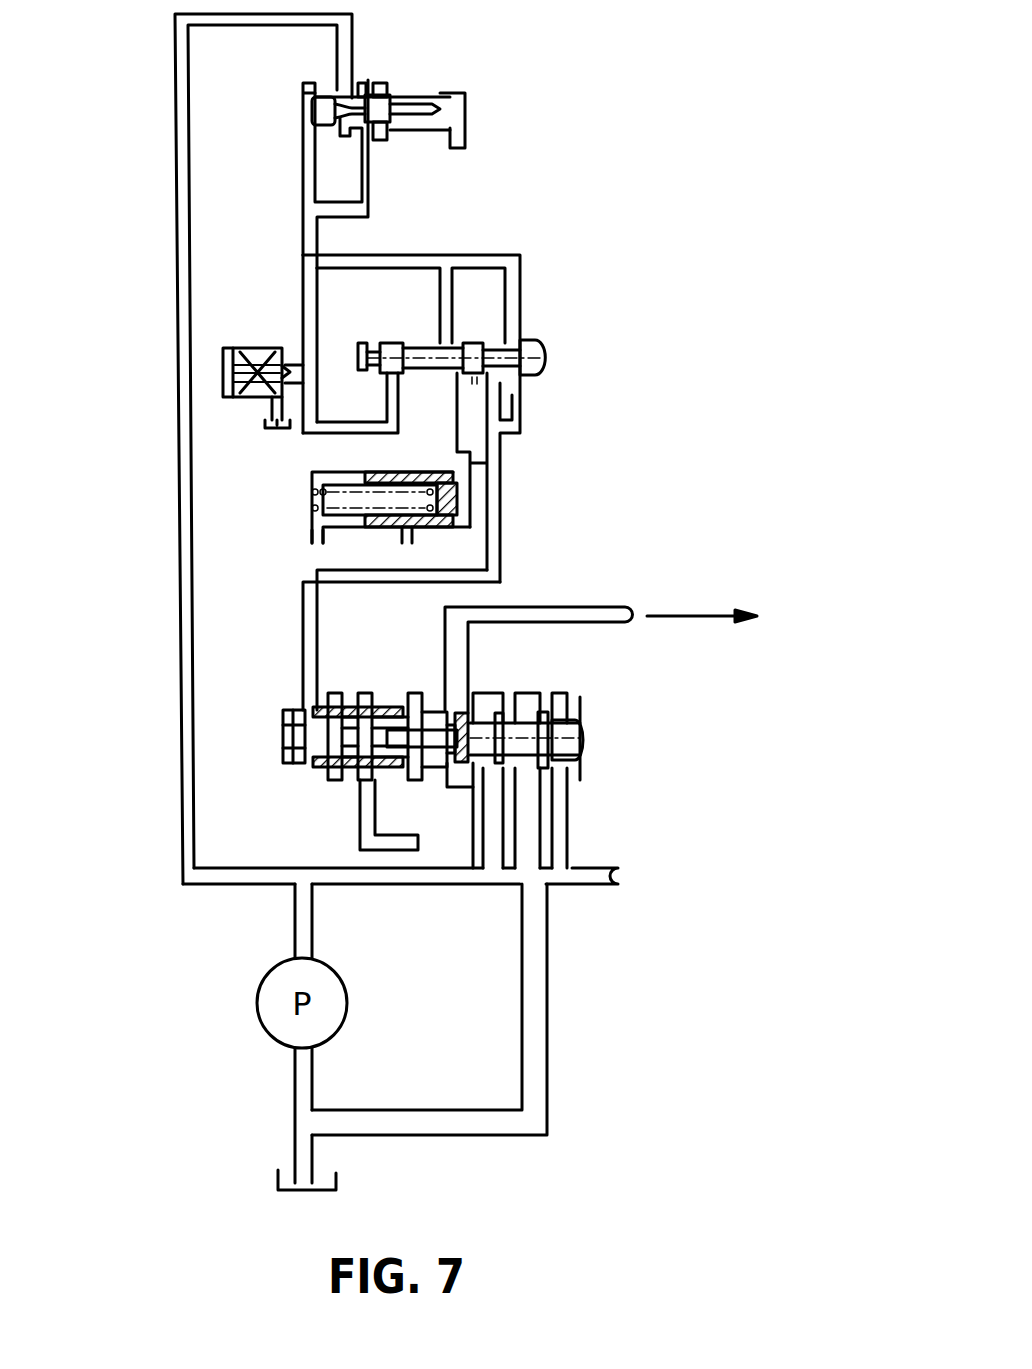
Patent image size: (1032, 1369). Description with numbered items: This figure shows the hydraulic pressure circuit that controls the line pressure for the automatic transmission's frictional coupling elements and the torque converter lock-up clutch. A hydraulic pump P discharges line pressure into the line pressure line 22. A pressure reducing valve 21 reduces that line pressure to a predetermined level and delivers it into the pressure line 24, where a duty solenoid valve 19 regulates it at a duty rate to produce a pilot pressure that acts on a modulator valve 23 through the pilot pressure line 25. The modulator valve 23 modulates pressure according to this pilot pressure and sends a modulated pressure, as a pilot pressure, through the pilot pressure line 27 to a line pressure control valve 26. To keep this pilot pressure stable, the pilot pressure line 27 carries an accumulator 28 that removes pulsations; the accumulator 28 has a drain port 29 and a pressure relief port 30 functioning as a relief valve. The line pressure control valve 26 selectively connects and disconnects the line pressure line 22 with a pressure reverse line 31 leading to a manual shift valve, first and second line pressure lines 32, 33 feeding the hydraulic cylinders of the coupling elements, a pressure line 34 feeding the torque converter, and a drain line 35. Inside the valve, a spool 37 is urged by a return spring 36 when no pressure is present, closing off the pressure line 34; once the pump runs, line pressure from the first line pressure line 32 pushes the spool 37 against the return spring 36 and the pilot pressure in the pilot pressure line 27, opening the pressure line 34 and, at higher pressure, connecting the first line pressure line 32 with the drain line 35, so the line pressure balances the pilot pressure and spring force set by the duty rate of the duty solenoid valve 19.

The duty solenoid valve 19 is at (250, 346).
The pressure reducing valve 21 is at (424, 92).
The line pressure line 22 is at (177, 400).
The modulator valve 23 is at (423, 340).
The pressure line 24 is at (302, 238).
The pilot pressure line 25 is at (322, 385).
The line pressure control valve 26 is at (385, 700).
The pilot pressure line 27 is at (503, 533).
The accumulator 28 is at (430, 467).
The drain port 29 is at (310, 538).
The pressure relief port 30 is at (412, 537).
The pressure reverse line 31 is at (358, 823).
The first line pressure line 32 is at (471, 820).
The second line pressure line 33 is at (570, 832).
The pressure line 34 is at (472, 662).
The drain line 35 is at (549, 1040).
The return spring 36 is at (408, 712).
The spool 37 is at (283, 733).